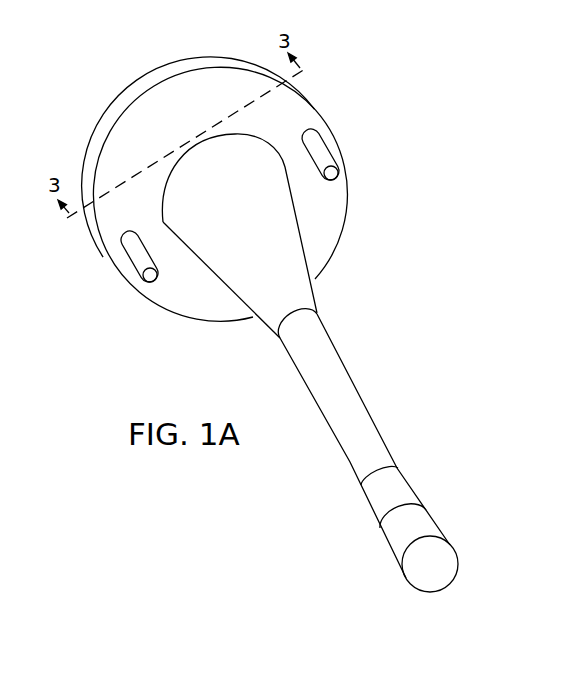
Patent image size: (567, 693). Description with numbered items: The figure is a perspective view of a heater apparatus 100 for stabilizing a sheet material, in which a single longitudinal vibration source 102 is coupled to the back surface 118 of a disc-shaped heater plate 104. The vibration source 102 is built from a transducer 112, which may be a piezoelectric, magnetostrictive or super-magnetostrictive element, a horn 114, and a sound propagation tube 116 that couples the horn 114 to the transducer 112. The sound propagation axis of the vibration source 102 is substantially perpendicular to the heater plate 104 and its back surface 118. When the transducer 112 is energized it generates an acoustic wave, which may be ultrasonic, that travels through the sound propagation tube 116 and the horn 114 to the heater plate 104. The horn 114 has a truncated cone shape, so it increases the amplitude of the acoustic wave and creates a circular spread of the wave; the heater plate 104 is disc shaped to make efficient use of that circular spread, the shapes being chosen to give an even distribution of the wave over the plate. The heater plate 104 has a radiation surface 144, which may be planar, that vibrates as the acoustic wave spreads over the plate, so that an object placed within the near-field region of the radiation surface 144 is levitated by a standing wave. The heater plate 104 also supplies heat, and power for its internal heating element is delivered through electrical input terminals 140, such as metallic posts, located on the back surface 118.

The apparatus 100 is at (322, 110).
The longitudinal vibration source 102 is at (353, 375).
The heater plate 104 is at (141, 82).
The transducer 112 is at (439, 524).
The horn 114 is at (301, 233).
The sound propagation tube 116 is at (369, 419).
The back surface 118 is at (206, 80).
The electrical input terminals 140 is at (316, 152).
The radiation surface 144 is at (103, 110).